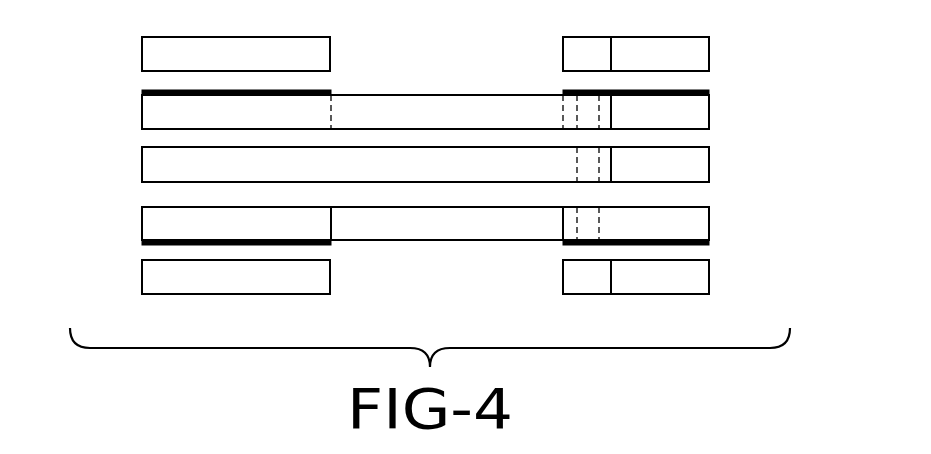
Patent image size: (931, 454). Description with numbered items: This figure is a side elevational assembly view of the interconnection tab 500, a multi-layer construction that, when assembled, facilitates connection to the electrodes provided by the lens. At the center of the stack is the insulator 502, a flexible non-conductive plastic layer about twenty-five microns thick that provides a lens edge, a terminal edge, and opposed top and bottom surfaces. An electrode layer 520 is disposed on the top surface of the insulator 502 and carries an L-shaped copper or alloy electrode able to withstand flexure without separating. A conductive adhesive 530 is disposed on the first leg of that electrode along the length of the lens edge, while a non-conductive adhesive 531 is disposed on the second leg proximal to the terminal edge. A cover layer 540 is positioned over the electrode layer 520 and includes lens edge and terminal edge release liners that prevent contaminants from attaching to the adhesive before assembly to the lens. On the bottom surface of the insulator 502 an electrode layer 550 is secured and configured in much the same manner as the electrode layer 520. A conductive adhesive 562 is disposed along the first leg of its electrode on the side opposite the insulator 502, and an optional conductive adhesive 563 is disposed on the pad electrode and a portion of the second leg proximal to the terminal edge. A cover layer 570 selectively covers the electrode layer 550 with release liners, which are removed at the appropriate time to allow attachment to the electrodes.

The interconnection tab 500 is at (120, 33).
The cover layer 540 is at (722, 33).
The electrode layer 520 is at (466, 91).
The insulator 502 is at (722, 144).
The electrode layer 550 is at (466, 243).
The cover layer 570 is at (722, 257).
The conductive adhesive 530 is at (331, 91).
The non-conductive adhesive 531 is at (563, 91).
The conductive adhesive 562 is at (331, 244).
The conductive adhesive 563 is at (563, 244).